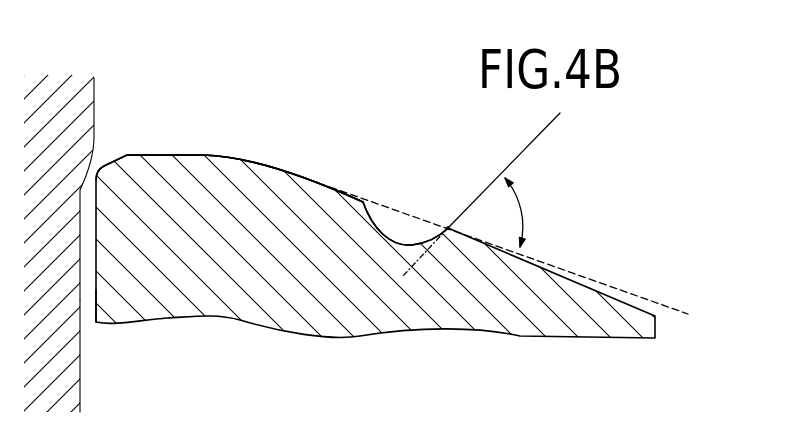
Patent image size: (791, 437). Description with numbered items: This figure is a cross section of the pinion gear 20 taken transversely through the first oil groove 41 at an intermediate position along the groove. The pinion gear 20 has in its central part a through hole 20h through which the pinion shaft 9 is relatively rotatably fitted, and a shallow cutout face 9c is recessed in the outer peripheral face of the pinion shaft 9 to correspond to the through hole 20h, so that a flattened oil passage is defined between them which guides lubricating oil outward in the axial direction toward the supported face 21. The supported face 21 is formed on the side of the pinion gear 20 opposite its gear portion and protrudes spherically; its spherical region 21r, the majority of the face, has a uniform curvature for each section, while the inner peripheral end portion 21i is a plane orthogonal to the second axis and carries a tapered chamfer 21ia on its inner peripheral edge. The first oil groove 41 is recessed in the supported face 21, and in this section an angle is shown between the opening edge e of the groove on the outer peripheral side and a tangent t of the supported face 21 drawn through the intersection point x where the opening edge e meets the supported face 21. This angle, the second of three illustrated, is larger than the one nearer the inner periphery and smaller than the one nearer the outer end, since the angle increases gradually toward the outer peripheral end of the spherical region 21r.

The pinion shaft 9 is at (100, 86).
The cutout face 9c is at (86, 372).
The pinion gear 20 is at (262, 266).
The through hole 20h is at (86, 298).
The supported face 21 is at (353, 96).
The inner peripheral end portion 21i is at (182, 156).
The spherical region 21r is at (297, 174).
The tapered chamfer 21ia is at (111, 167).
The first oil groove 41 is at (378, 226).
The opening edge e is at (447, 227).
The intersection point x is at (450, 232).
The tangent t is at (663, 308).